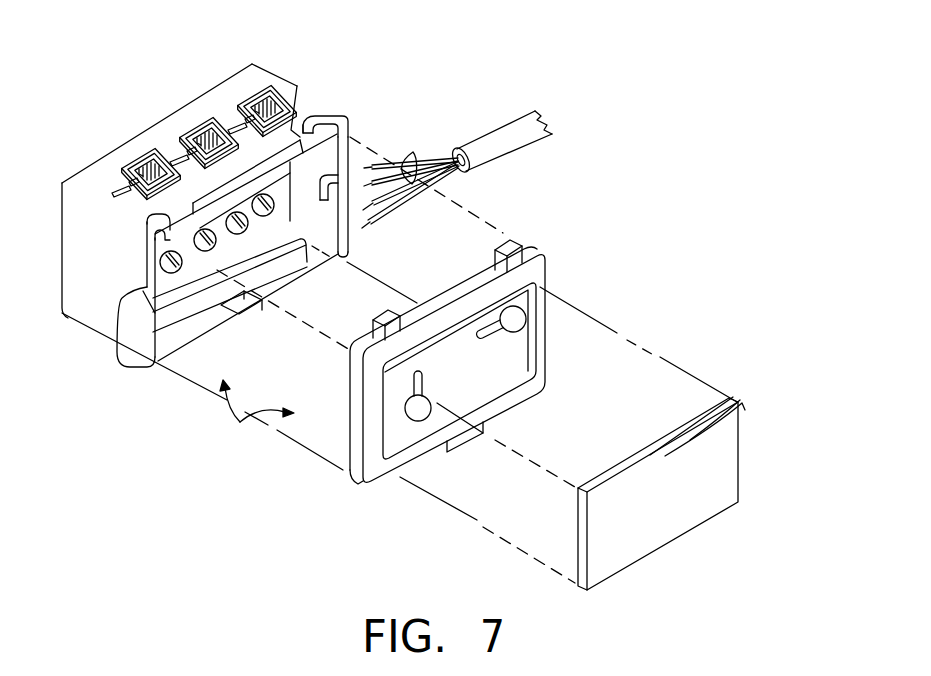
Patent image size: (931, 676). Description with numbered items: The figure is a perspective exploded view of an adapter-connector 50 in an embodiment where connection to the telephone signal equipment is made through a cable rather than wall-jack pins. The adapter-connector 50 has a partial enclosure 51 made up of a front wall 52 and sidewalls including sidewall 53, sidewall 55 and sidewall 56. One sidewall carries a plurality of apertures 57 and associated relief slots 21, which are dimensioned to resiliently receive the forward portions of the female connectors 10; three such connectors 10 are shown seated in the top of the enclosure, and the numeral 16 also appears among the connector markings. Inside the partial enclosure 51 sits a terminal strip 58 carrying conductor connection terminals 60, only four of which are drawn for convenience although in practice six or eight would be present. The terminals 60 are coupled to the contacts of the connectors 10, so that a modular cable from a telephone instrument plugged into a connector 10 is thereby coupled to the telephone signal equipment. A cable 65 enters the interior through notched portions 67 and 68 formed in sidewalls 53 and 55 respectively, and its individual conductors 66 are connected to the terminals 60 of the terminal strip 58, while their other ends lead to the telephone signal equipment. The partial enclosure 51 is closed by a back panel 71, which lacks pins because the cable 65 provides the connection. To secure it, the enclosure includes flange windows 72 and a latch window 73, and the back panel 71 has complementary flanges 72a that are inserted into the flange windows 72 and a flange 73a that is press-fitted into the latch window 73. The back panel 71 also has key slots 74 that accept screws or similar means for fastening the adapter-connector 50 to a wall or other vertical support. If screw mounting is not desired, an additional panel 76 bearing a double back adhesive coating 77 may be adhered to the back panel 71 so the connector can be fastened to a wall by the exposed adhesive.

The connectors 10 is at (258, 82).
The contacts 16 is at (236, 112).
The relief slots 21 is at (286, 112).
The adapter-connector 50 is at (257, 415).
The partial enclosure 51 is at (300, 78).
The front wall 52 is at (62, 230).
The sidewall 53 is at (349, 125).
The sidewall 55 is at (83, 291).
The sidewall 56 is at (218, 340).
The apertures 57 is at (240, 115).
The terminal strip 58 is at (291, 196).
The conductor connection terminals 60 is at (204, 252).
The cable 65 is at (505, 145).
The conductors 66 is at (409, 160).
The notched portion 67 is at (349, 198).
The notched portion 68 is at (118, 360).
The back panel 71 is at (530, 306).
The flange windows 72 is at (148, 240).
The flanges 72a is at (527, 212).
The latch window 73 is at (245, 313).
The flange 73a is at (453, 447).
The key slots 74 is at (513, 333).
The additional panel 76 is at (737, 418).
The double back adhesive coating 77 is at (713, 403).